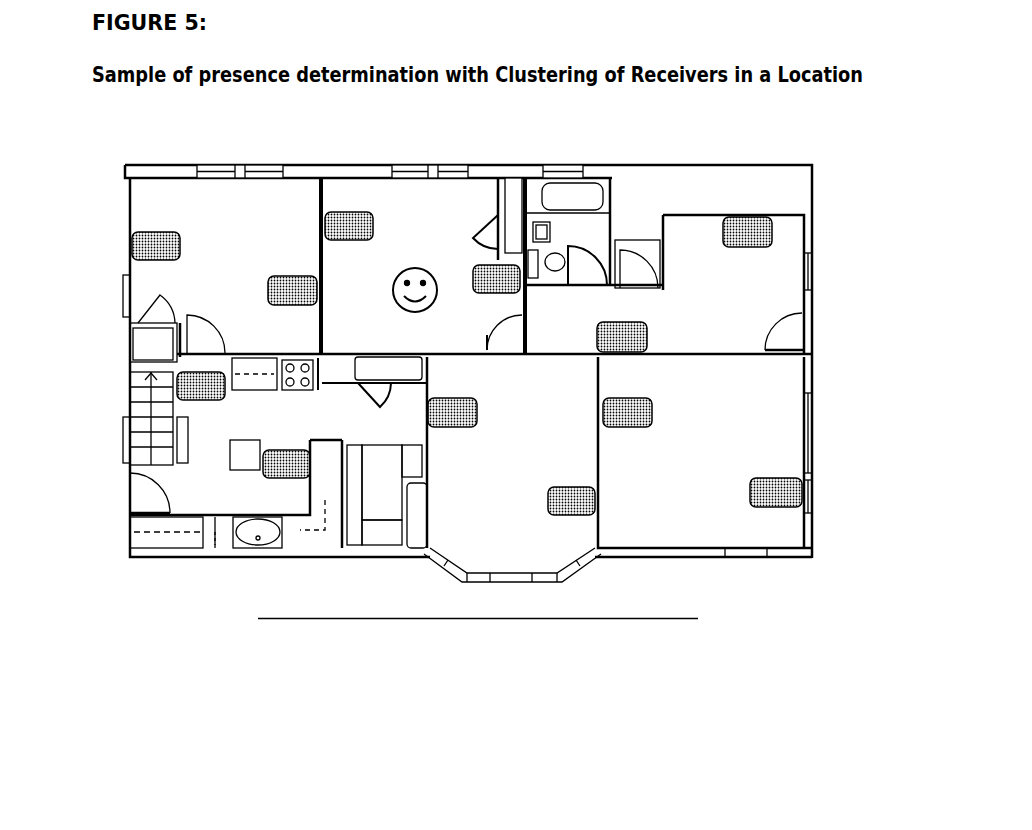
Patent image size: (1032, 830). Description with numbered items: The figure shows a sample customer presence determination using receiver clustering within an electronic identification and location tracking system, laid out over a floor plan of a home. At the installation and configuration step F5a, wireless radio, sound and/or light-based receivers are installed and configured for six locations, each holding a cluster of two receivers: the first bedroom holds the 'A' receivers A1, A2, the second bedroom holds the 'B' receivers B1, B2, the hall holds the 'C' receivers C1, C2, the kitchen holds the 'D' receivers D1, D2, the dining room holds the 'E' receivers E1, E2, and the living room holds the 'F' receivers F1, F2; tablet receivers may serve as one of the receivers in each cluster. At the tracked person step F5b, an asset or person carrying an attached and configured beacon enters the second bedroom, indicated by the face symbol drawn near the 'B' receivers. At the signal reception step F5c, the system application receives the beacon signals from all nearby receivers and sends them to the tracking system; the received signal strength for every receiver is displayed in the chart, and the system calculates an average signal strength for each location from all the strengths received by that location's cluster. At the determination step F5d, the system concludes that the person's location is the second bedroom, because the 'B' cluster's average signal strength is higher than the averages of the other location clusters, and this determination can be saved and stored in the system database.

The receiver installation and configuration step F5a is at (443, 373).
The tracked asset or person entering Bedroom 2 F5b is at (438, 297).
The signal strength data reception and averaging step F5c is at (474, 655).
The location determination step F5d is at (498, 763).
The Bedroom 1 'A' receiver A1 is at (156, 246).
The Bedroom 1 'A' receiver A2 is at (292, 290).
The Bedroom 2 'B' receiver B1 is at (349, 226).
The Bedroom 2 'B' receiver B2 is at (496, 279).
The Hall 'C' receiver C1 is at (622, 337).
The Hall 'C' receiver C2 is at (747, 232).
The Kitchen 'D' receiver D1 is at (201, 386).
The Kitchen 'D' receiver D2 is at (286, 464).
The Dining Room 'E' receiver E1 is at (452, 412).
The Dining Room 'E' receiver E2 is at (571, 501).
The Living Room 'F' receiver F1 is at (627, 412).
The Living Room 'F' receiver F2 is at (776, 492).